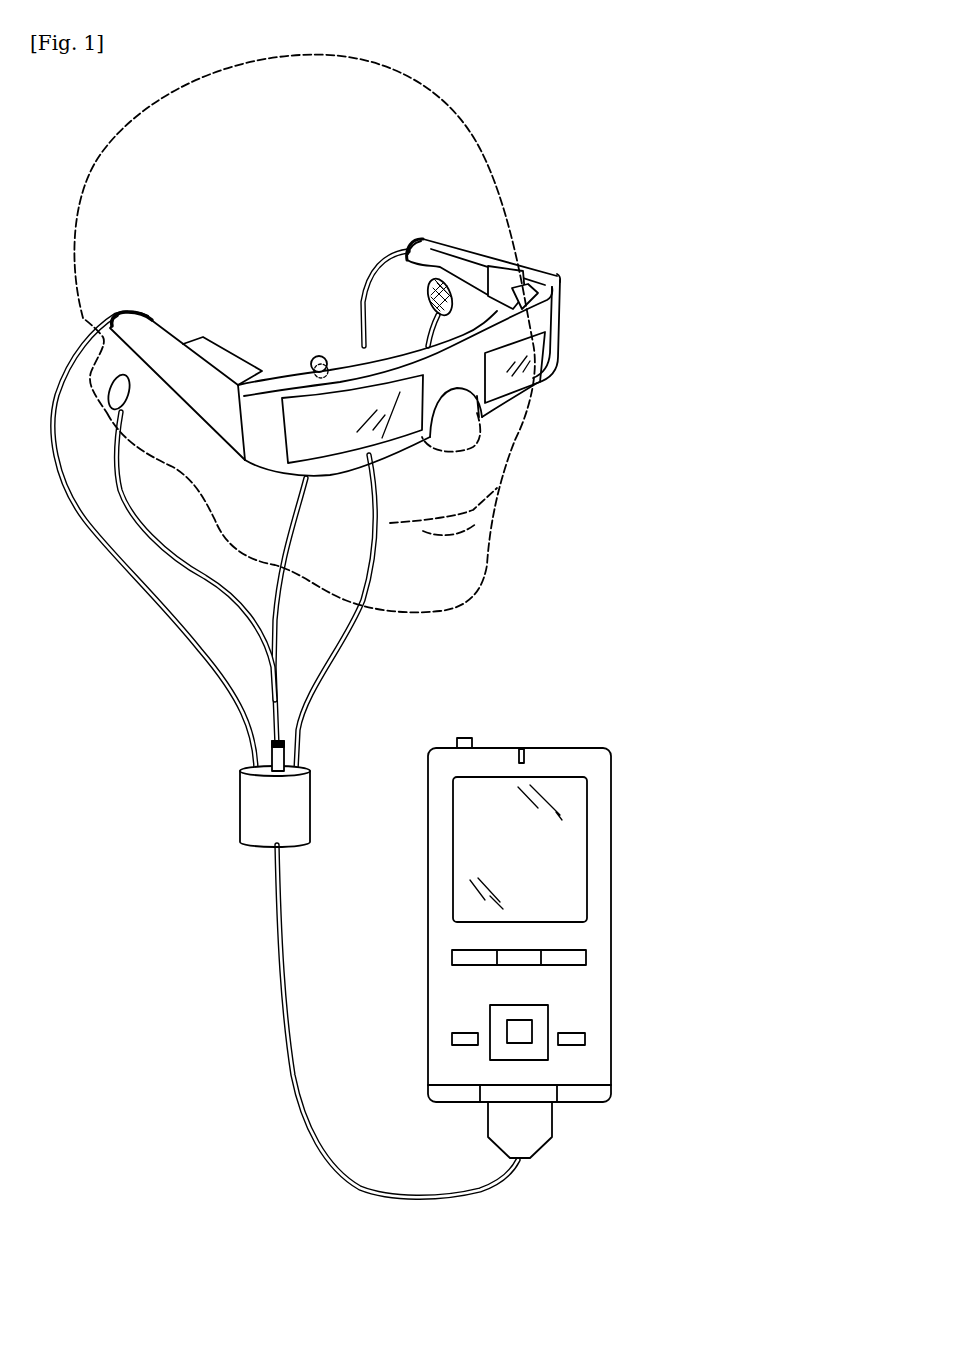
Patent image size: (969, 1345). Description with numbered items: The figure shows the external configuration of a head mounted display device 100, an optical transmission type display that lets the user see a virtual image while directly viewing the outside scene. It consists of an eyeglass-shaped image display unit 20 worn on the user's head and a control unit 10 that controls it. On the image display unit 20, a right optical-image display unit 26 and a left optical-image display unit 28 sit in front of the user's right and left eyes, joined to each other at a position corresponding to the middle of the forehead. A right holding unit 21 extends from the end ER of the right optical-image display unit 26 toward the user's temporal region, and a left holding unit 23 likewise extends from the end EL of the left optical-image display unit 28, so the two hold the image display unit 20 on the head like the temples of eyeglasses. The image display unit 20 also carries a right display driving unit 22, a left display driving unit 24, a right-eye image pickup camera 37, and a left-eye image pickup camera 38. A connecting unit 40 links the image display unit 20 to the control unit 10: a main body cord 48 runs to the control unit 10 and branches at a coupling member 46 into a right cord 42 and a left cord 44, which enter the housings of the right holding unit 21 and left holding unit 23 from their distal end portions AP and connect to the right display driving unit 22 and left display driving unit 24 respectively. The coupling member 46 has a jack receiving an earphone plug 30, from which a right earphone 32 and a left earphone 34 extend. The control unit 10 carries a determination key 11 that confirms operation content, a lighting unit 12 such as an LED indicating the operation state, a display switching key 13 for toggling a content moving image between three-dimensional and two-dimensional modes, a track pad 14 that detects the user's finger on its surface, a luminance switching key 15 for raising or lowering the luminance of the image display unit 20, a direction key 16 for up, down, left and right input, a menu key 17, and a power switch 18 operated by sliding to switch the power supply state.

The head mounted display device 100 is at (503, 140).
The control unit 10 is at (590, 678).
The determination key 11 is at (523, 1028).
The lighting unit 12 is at (522, 748).
The display switching key 13 is at (583, 1037).
The track pad 14 is at (472, 838).
The luminance switching key 15 is at (457, 1036).
The direction key 16 is at (500, 1018).
The menu key 17 is at (453, 950).
The power switch 18 is at (465, 737).
The image display unit 20 is at (569, 270).
The right holding unit 21 is at (127, 307).
The right display driving unit 22 is at (216, 346).
The left holding unit 23 is at (480, 242).
The left display driving unit 24 is at (506, 267).
The right optical-image display unit 26 is at (330, 450).
The left optical-image display unit 28 is at (547, 367).
The earphone plug 30 is at (280, 750).
The right earphone 32 is at (110, 390).
The left earphone 34 is at (428, 300).
The right-eye image pickup camera 37 is at (320, 356).
The left-eye image pickup camera 38 is at (540, 293).
The connecting unit 40 is at (333, 759).
The right cord 42 is at (143, 603).
The left cord 44 is at (347, 637).
The coupling member 46 is at (300, 805).
The main body cord 48 is at (280, 983).
The distal end portion AP is at (110, 317).
The end EL is at (557, 323).
The end ER is at (260, 453).